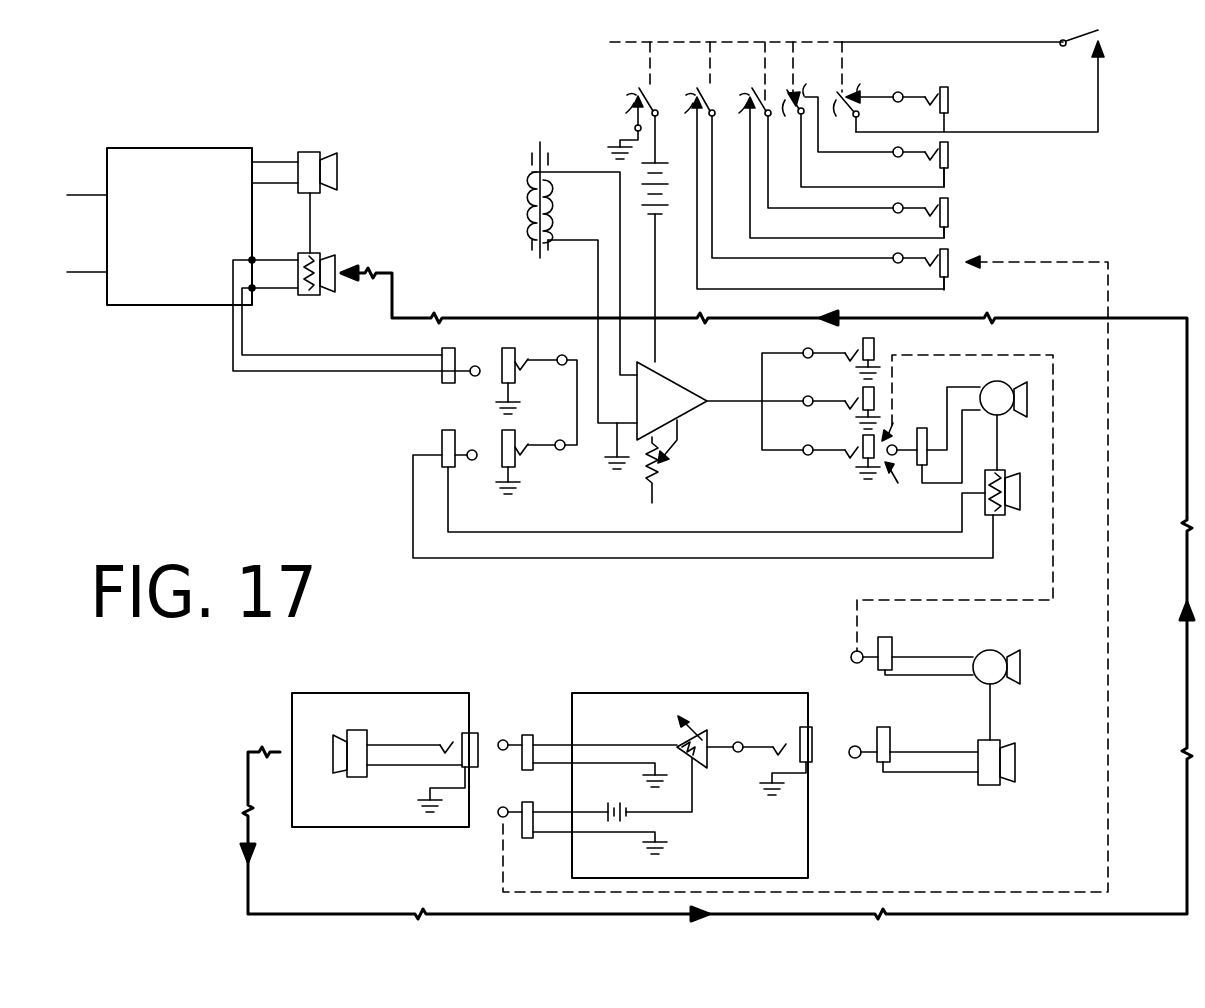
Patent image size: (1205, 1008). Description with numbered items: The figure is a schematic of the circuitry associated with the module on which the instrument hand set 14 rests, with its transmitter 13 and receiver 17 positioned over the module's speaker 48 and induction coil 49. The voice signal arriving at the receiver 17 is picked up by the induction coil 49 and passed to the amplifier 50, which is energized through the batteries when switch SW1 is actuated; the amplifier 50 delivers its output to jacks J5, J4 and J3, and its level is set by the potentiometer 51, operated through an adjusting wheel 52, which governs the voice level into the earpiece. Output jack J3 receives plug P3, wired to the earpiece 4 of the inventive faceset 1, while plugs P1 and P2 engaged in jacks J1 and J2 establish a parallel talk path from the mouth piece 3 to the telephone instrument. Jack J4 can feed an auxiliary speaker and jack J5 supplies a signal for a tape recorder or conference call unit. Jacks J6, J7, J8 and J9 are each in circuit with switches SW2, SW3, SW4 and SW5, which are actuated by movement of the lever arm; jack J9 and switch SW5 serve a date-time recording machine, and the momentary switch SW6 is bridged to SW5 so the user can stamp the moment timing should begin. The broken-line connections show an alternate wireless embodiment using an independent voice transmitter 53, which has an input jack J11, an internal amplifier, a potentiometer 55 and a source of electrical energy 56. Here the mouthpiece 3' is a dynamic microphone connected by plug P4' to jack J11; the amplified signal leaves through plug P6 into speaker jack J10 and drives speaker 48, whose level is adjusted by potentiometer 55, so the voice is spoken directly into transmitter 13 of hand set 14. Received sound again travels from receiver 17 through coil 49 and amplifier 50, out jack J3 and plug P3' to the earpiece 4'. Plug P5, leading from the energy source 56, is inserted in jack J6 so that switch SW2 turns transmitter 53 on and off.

The adjusting wheel 52 is at (188, 148).
The receiver 17 is at (347, 160).
The instrument hand set 14 is at (312, 230).
The transmitter 13 is at (340, 250).
The induction coil 49 is at (528, 205).
The amplifier 50 is at (666, 380).
The potentiometer 51 is at (658, 475).
The speaker 48 is at (352, 730).
The transmitter 53 is at (642, 693).
The potentiometer 55 is at (692, 728).
The source of electrical energy 56 is at (617, 800).
The earpiece 4 is at (1013, 399).
The mouth piece 3 is at (1012, 492).
The faceset 1 is at (1010, 448).
The earpiece 4' is at (1012, 667).
The mouthpiece 3' is at (1011, 762).
The switch SW1 is at (629, 110).
The switch SW2 is at (804, 173).
The switch SW3 is at (833, 147).
The switch SW4 is at (861, 122).
The switch SW5 is at (860, 97).
The switch SW6 is at (1006, 81).
The jack J1 is at (517, 359).
The jack J2 is at (517, 441).
The output jack J3 is at (860, 462).
The jack J4 is at (875, 400).
The jack J5 is at (876, 357).
The jack J6 is at (950, 262).
The jack J7 is at (950, 209).
The jack J8 is at (950, 153).
The jack J9 is at (950, 98).
The speaker jack J10 is at (472, 737).
The input jack J11 is at (812, 743).
The plug P1 is at (475, 365).
The plug P2 is at (474, 449).
The plug P3 is at (911, 435).
The plug P5 is at (498, 808).
The plug P6 is at (504, 740).
The plug P3' is at (855, 653).
The plug P4' is at (866, 739).